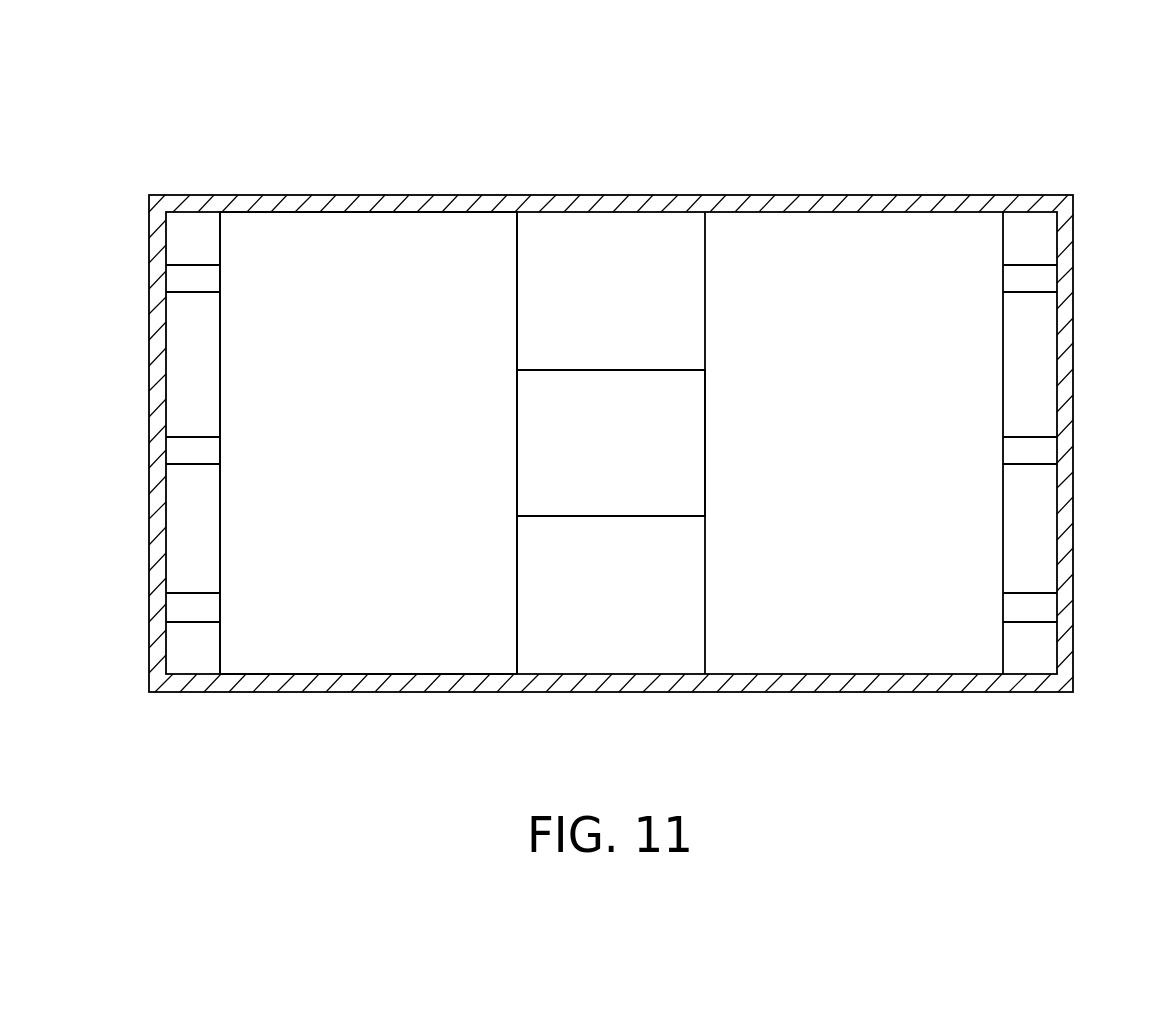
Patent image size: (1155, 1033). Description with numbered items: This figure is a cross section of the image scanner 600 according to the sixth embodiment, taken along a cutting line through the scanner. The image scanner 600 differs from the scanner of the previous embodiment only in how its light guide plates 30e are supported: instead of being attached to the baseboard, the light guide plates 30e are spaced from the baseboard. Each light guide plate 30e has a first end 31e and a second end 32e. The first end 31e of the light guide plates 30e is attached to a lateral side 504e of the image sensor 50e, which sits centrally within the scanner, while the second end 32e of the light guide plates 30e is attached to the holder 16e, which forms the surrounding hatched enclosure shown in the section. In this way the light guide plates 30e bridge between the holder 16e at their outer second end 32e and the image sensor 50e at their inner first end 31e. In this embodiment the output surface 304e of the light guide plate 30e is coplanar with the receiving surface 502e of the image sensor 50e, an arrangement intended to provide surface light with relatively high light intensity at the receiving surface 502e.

The image scanner 600 is at (207, 100).
The holder 16e is at (190, 195).
The output surface 304e is at (371, 248).
The receiving surface 502e is at (632, 398).
The lateral side 504e is at (522, 433).
The image sensor 50e is at (608, 505).
The light guide plates 30e is at (343, 762).
The first end 31e is at (443, 647).
The second end 32e is at (250, 645).